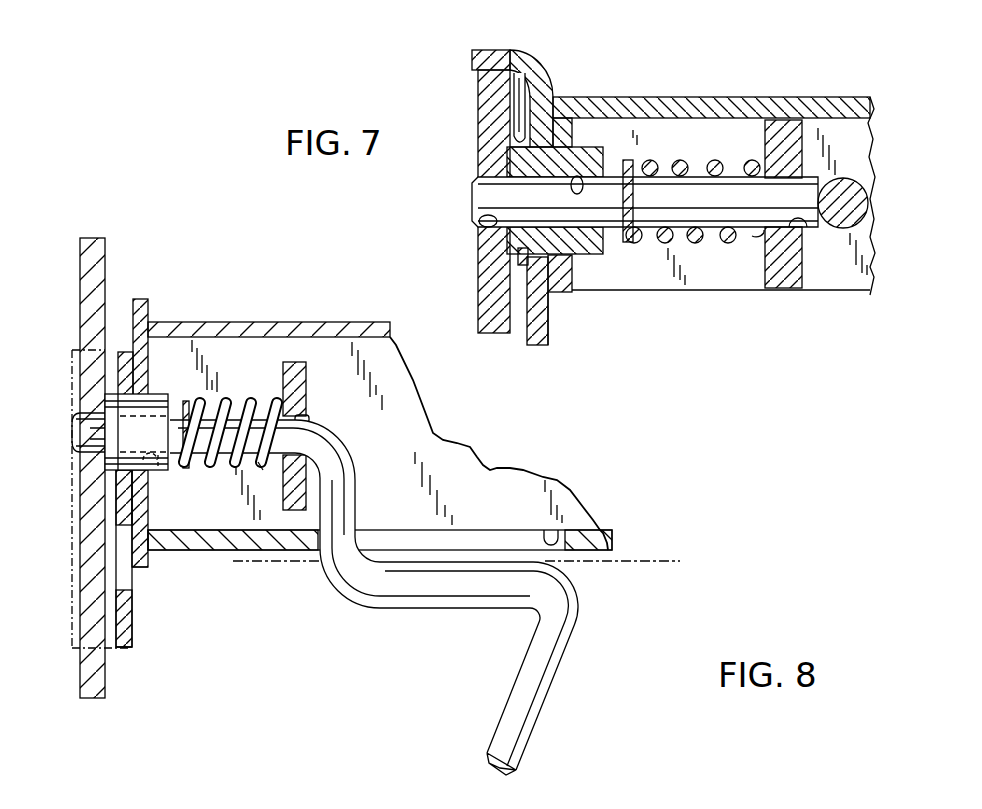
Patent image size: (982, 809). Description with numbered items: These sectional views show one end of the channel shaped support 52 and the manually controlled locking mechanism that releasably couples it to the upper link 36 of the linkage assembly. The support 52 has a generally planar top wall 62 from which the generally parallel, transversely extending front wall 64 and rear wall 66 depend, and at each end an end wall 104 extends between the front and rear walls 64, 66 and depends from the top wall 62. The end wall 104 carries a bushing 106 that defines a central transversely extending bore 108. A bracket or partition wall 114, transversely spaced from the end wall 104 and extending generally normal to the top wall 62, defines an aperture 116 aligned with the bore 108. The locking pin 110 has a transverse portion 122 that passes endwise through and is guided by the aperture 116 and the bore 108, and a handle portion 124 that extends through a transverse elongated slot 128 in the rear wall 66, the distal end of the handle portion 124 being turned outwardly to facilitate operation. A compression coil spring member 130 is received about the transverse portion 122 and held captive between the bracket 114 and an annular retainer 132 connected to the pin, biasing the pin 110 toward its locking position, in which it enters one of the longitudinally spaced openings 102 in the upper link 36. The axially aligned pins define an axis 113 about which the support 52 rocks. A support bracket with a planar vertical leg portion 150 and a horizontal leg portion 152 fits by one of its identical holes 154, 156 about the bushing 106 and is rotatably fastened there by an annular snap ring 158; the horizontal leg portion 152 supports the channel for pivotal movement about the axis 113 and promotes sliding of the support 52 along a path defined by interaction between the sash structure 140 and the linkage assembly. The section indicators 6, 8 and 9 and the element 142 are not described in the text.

In FIG. 7, the section line 6 is at (120, 20).
In FIG. 7, the section line 8 is at (462, 201).
In FIG. 8, the section line 9 is at (242, 569).
In FIG. 7, the upper link 36 is at (497, 330).
In FIG. 8, the upper link 36 is at (97, 680).
In FIG. 7, the support 52 is at (709, 84).
In FIG. 8, the support 52 is at (431, 413).
In FIG. 7, the top wall 62 is at (799, 100).
In FIG. 8, the top wall 62 is at (496, 480).
In FIG. 7, the front wall 64 is at (737, 286).
In FIG. 8, the front wall 64 is at (313, 323).
In FIG. 8, the rear wall 66 is at (612, 545).
In FIG. 7, the openings 102 is at (478, 235).
In FIG. 8, the openings 102 is at (78, 444).
In FIG. 7, the end wall 104 is at (562, 288).
In FIG. 8, the end wall 104 is at (142, 298).
In FIG. 7, the bushing 106 is at (590, 253).
In FIG. 8, the bushing 106 is at (150, 425).
In FIG. 7, the bore 108 is at (579, 177).
In FIG. 8, the bore 108 is at (160, 470).
In FIG. 7, the locking pin 110 is at (668, 262).
In FIG. 8, the locking pin 110 is at (395, 597).
In FIG. 7, the axis 113 is at (476, 222).
In FIG. 7, the bracket 114 is at (784, 283).
In FIG. 8, the bracket 114 is at (303, 372).
In FIG. 7, the aperture 116 is at (798, 216).
In FIG. 8, the aperture 116 is at (311, 416).
In FIG. 7, the transverse portion 122 is at (695, 182).
In FIG. 8, the transverse portion 122 is at (223, 405).
In FIG. 8, the handle portion 124 is at (542, 703).
In FIG. 8, the slot 128 is at (547, 531).
In FIG. 7, the compression coil spring member 130 is at (692, 240).
In FIG. 8, the compression coil spring member 130 is at (235, 470).
In FIG. 7, the annular retainer 132 is at (635, 158).
In FIG. 8, the annular retainer 132 is at (187, 402).
In FIG. 7, the sash structure 140 is at (560, 66).
In FIG. 8, the sash structure 140 is at (119, 336).
In FIG. 7, the bracket portion 142 is at (546, 314).
In FIG. 8, the bracket portion 142 is at (77, 353).
In FIG. 7, the vertical leg portion 150 is at (537, 338).
In FIG. 7, the horizontal leg portion 152 is at (474, 60).
In FIG. 8, the horizontal leg portion 152 is at (110, 634).
In FIG. 7, the hole 154 is at (527, 158).
In FIG. 8, the hole 154 is at (147, 415).
In FIG. 8, the hole 156 is at (123, 602).
In FIG. 7, the snap ring 158 is at (512, 112).
In FIG. 8, the snap ring 158 is at (105, 425).